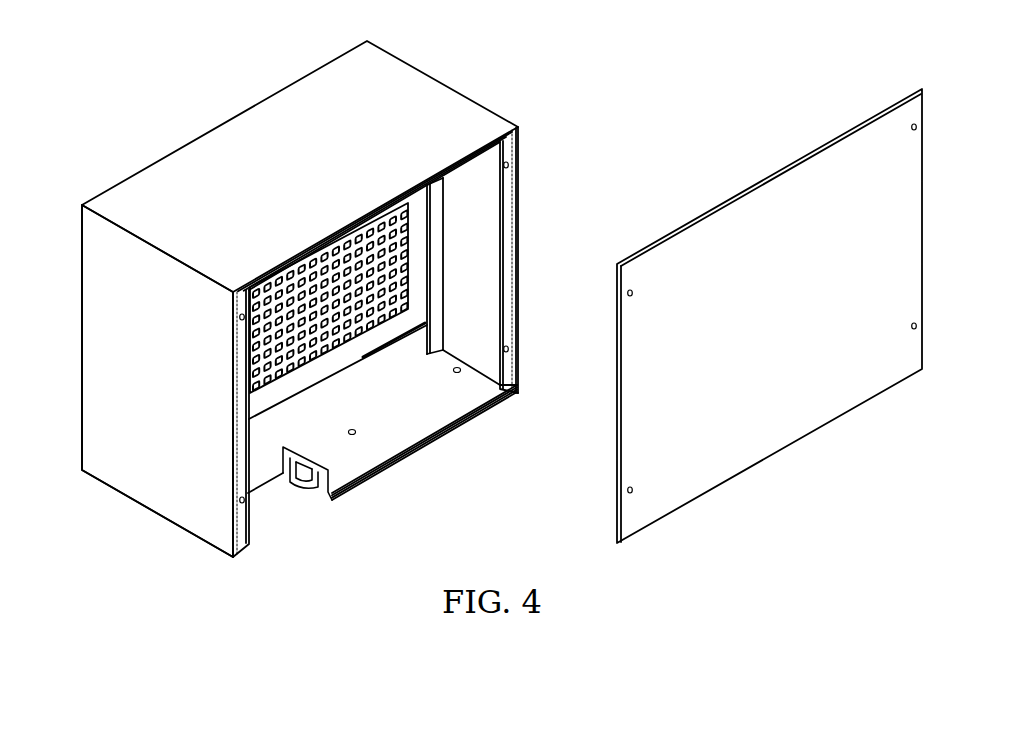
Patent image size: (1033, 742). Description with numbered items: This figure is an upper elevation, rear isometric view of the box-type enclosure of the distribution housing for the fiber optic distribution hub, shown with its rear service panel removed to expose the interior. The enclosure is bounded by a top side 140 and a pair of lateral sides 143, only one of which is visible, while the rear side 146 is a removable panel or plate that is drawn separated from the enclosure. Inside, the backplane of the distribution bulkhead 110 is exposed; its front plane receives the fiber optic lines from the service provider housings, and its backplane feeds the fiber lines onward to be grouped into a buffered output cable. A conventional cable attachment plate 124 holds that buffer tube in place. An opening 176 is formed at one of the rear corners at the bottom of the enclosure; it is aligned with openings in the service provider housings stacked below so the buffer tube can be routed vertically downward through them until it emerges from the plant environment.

The distribution bulkhead 110 is at (320, 368).
The cable attachment plate 124 is at (309, 492).
The top side 140 is at (253, 123).
The lateral side 143 is at (168, 472).
The rear side 146 is at (793, 339).
The opening 176 is at (267, 503).